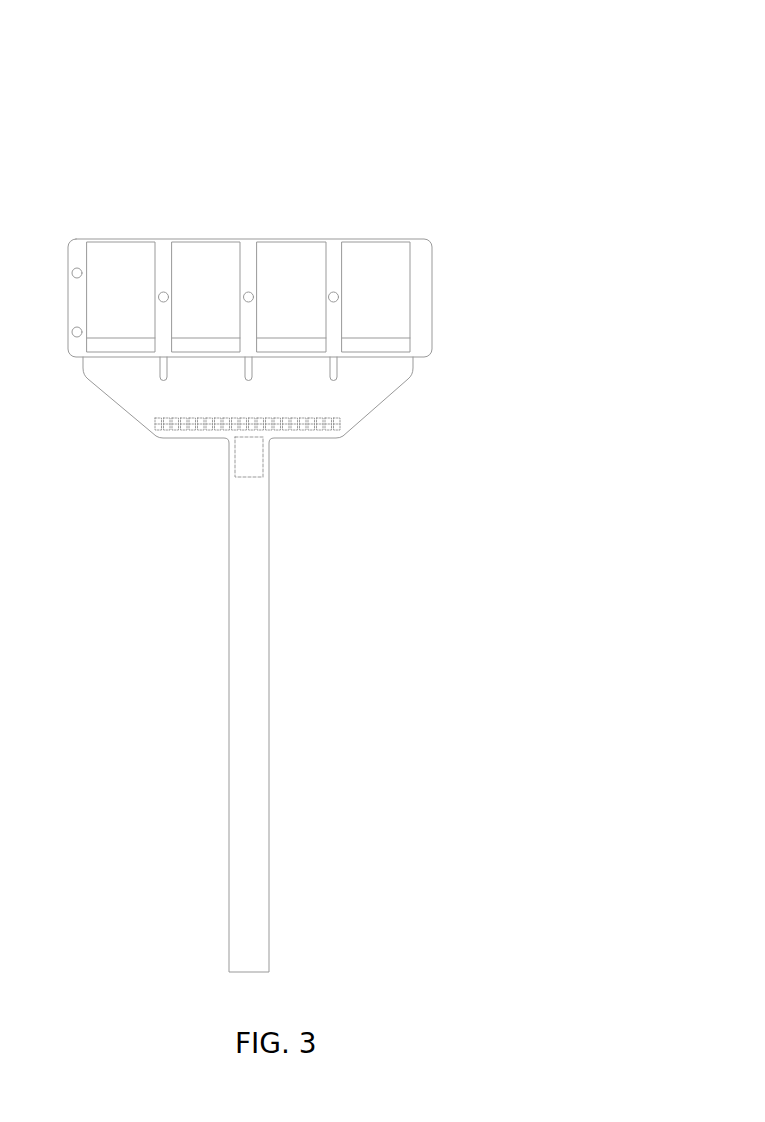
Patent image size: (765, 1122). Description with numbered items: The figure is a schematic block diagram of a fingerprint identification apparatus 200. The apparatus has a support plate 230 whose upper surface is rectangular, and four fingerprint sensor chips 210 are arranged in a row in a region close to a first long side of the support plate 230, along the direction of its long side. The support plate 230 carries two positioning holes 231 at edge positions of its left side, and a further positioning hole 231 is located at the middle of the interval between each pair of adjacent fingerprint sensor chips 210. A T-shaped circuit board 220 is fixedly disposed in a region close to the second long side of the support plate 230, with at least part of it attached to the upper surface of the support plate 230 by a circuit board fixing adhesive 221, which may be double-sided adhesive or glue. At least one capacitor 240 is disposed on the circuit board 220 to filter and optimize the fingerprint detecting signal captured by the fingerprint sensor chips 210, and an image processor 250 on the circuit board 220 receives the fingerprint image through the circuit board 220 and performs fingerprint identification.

The fingerprint identification apparatus 200 is at (287, 40).
The fingerprint sensor chip 210 is at (103, 262).
The circuit board 220 is at (137, 415).
The circuit board fixing adhesive 221 is at (335, 382).
The support plate 230 is at (421, 298).
The positioning hole 231 is at (82, 338).
The capacitor 240 is at (312, 422).
The image processor 250 is at (237, 470).